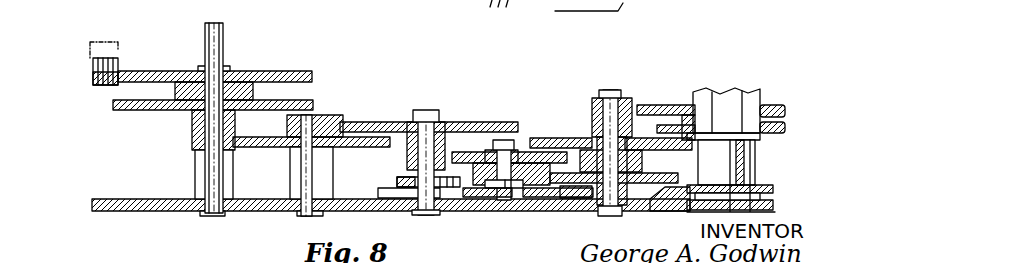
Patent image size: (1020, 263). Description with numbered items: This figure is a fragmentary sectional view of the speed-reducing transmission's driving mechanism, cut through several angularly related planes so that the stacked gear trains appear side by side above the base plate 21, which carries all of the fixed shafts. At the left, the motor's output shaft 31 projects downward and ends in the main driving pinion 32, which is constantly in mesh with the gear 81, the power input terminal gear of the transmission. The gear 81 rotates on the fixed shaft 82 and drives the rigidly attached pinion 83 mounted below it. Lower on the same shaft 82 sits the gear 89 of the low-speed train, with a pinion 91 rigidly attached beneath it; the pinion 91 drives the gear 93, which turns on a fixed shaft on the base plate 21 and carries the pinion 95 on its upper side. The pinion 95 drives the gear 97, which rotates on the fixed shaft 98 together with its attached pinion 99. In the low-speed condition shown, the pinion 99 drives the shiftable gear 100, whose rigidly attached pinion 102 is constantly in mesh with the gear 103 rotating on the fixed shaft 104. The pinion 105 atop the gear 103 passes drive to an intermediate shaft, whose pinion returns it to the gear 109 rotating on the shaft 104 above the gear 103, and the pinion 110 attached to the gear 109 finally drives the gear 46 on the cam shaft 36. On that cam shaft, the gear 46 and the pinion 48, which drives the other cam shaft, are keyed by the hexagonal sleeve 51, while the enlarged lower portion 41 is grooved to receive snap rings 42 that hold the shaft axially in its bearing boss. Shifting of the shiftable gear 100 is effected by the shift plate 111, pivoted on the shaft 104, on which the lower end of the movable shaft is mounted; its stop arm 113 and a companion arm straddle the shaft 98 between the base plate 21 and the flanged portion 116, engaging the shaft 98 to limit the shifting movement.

The base plate 21 is at (128, 212).
The output shaft 31 is at (89, 44).
The main driving pinion 32 is at (90, 80).
The cam shaft 36 is at (690, 210).
The enlarged portion 41 is at (757, 166).
The snap rings 42 is at (783, 207).
The gear 46 is at (657, 105).
The pinion 48 is at (786, 130).
The sleeve 51 is at (736, 96).
The gear 81 is at (153, 70).
The fixed shaft 82 is at (225, 32).
The pinion 83 is at (250, 83).
The gear 89 is at (130, 110).
The pinion 91 is at (187, 143).
The gear 93 is at (262, 140).
The pinion 95 is at (340, 122).
The gear 97 is at (512, 122).
The fixed shaft 98 is at (425, 110).
The pinion 99 is at (405, 153).
The shiftable gear 100 is at (468, 152).
The pinion 102 is at (530, 190).
The gear 103 is at (556, 190).
The fixed shaft 104 is at (612, 90).
The pinion 105 is at (640, 160).
The gear 109 is at (545, 139).
The pinion 110 is at (634, 100).
The shift plate 111 is at (575, 205).
The stop arm 113 is at (380, 198).
The flanged portion 116 is at (397, 181).